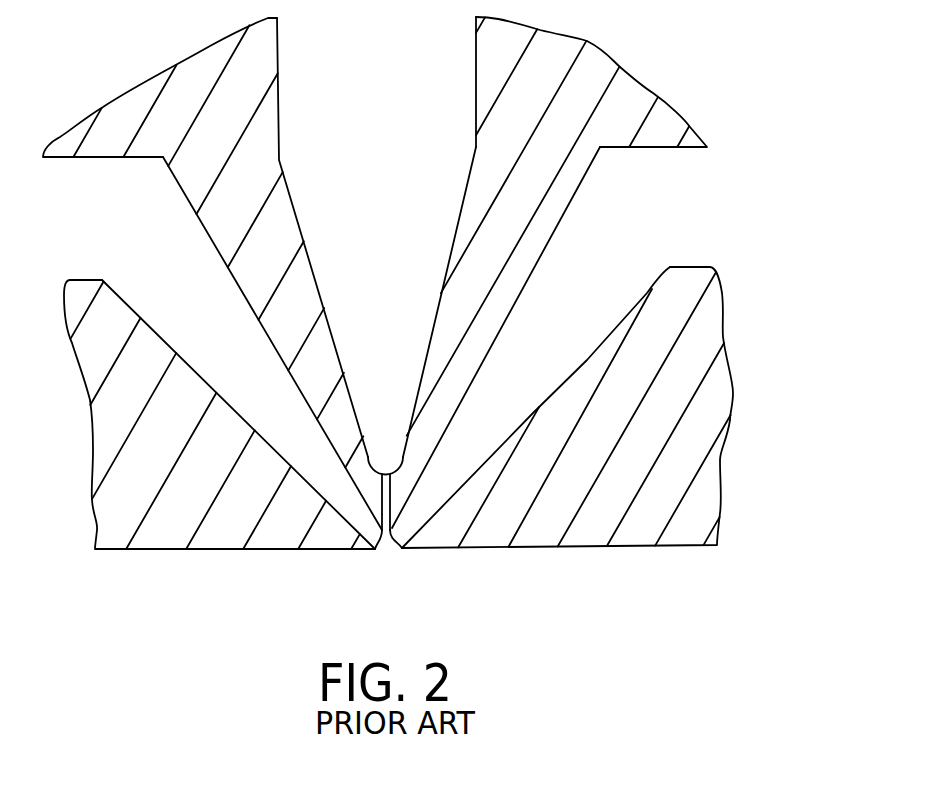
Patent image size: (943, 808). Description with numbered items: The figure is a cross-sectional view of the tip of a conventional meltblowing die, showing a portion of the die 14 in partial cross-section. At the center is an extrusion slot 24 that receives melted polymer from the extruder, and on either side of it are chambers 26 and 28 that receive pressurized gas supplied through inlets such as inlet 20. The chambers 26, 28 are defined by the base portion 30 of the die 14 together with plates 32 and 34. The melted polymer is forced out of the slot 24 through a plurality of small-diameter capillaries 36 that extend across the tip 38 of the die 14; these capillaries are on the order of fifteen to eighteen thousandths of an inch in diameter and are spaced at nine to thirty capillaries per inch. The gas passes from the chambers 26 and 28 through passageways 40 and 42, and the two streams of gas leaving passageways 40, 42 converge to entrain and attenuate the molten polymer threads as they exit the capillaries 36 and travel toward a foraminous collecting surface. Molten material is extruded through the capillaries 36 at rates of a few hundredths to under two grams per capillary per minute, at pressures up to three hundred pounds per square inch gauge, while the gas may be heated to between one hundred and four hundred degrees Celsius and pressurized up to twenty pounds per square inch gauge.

The die 14 is at (644, 87).
The inlet 20 is at (72, 218).
The extrusion slot 24 is at (401, 144).
The chamber 26 is at (654, 236).
The chamber 28 is at (151, 245).
The base portion 30 is at (248, 175).
The plate 32 is at (637, 478).
The plate 34 is at (198, 487).
The capillaries 36 is at (388, 474).
The tip 38 is at (386, 533).
The passageway 40 is at (400, 550).
The passageway 42 is at (381, 548).